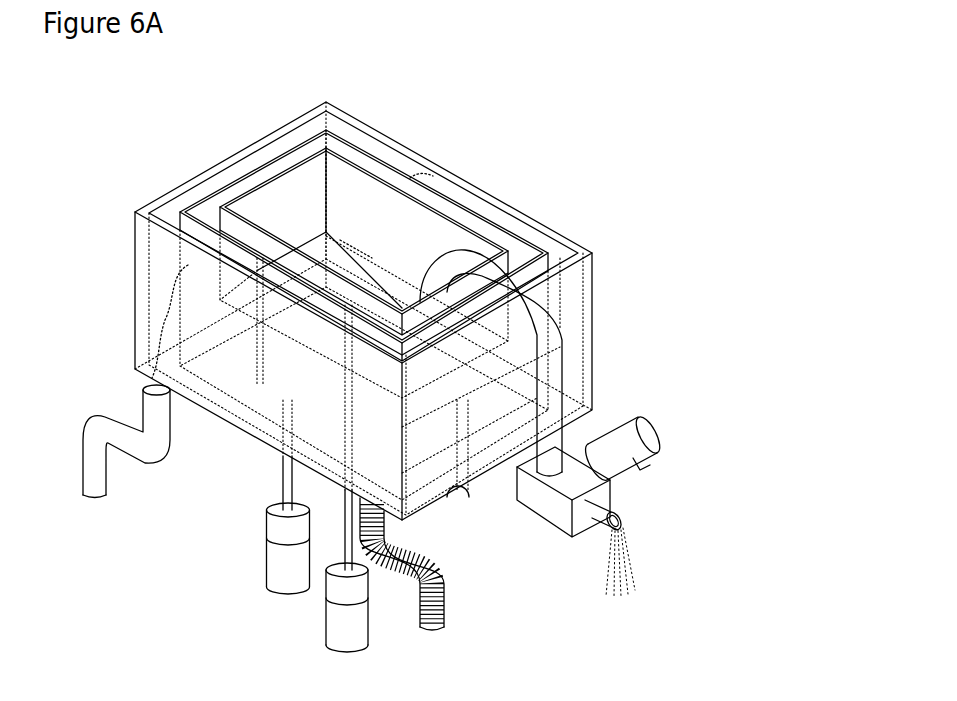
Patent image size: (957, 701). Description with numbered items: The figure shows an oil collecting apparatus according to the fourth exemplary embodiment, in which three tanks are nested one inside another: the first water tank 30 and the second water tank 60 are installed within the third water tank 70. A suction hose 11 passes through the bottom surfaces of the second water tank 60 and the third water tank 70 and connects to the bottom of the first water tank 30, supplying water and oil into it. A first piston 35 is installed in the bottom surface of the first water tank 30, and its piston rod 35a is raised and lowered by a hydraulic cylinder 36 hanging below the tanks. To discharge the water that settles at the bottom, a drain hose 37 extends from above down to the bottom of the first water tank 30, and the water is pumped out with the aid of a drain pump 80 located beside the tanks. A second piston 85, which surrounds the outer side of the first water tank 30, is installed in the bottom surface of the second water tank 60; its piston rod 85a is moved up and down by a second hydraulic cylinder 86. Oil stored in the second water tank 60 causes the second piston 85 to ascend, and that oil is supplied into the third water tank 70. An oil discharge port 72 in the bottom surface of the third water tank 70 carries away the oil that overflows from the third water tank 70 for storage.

The third water tank 70 is at (568, 253).
The second water tank 60 is at (517, 237).
The first water tank 30 is at (420, 223).
The first piston 35 is at (357, 253).
The drain hose 37 is at (557, 337).
The drain pump 80 is at (584, 438).
The oil discharge port 72 is at (135, 360).
The second piston 85 is at (185, 263).
The piston rod 85a is at (283, 480).
The hydraulic cylinder 86 is at (268, 558).
The piston rod 35a is at (340, 556).
The hydraulic cylinder 36 is at (328, 626).
The suction hose 11 is at (440, 566).